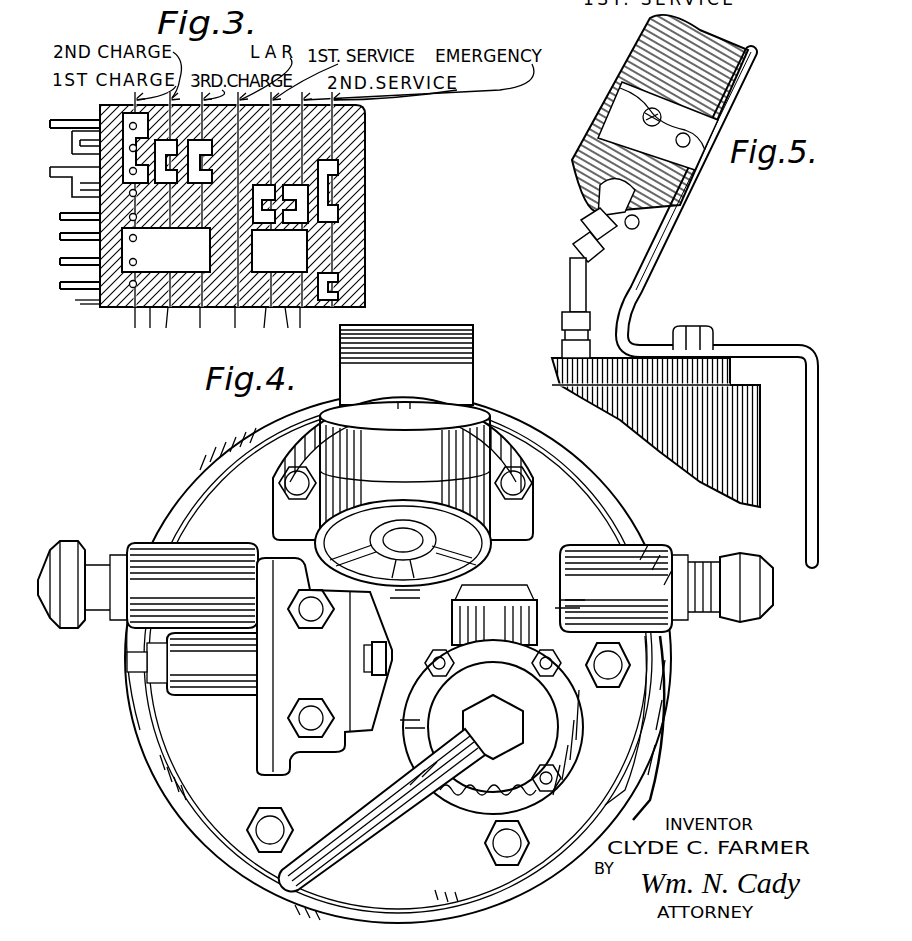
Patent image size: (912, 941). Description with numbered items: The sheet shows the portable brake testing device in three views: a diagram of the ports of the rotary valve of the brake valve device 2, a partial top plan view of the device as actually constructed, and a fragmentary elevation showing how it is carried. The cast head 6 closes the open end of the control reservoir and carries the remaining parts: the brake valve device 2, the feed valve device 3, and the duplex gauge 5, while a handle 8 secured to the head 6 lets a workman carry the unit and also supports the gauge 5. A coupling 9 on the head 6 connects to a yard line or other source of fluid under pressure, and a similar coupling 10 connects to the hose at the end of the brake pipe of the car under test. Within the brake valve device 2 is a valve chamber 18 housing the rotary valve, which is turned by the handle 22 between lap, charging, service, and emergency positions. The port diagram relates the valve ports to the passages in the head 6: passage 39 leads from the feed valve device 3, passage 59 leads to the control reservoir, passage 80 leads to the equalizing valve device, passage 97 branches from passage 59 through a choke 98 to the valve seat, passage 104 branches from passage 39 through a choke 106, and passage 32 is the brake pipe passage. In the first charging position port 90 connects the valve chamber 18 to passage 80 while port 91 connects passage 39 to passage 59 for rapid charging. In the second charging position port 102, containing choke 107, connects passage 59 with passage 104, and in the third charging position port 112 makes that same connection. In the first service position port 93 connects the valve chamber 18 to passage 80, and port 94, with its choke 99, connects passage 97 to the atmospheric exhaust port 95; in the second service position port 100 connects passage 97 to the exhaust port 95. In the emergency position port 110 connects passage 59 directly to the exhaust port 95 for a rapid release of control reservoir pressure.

In FIG. 4, the brake valve device 2 is at (588, 728).
In FIG. 4, the feed valve device 3 is at (238, 713).
In FIG. 4, the duplex gauge 5 is at (437, 440).
In FIG. 5, the duplex gauge 5 is at (610, 88).
In FIG. 4, the head 6 is at (233, 517).
In FIG. 4, the handle 8 is at (412, 333).
In FIG. 5, the handle 8 is at (628, 297).
In FIG. 4, the coupling 9 is at (70, 566).
In FIG. 4, the coupling 10 is at (735, 566).
In FIG. 3, the valve chamber 18 is at (72, 262).
In FIG. 4, the handle 22 is at (323, 865).
In FIG. 3, the brake pipe passage 32 is at (80, 302).
In FIG. 3, the passage 39 is at (100, 124).
In FIG. 3, the passage 59 is at (72, 176).
In FIG. 3, the passage 80 is at (72, 285).
In FIG. 3, the port 90 is at (150, 307).
In FIG. 3, the port 91 is at (145, 125).
In FIG. 3, the port 93 is at (283, 307).
In FIG. 3, the port 94 is at (262, 192).
In FIG. 3, the atmospheric exhaust port 95 is at (72, 238).
In FIG. 3, the passage 97 is at (72, 198).
In FIG. 3, the choke 98 is at (72, 217).
In FIG. 3, the choke 99 is at (293, 195).
In FIG. 3, the port 100 is at (262, 206).
In FIG. 3, the port 102 is at (145, 185).
In FIG. 3, the passage 104 is at (74, 128).
In FIG. 3, the choke 106 is at (76, 150).
In FIG. 3, the choke 107 is at (168, 185).
In FIG. 3, the port 110 is at (336, 176).
In FIG. 3, the port 112 is at (222, 136).